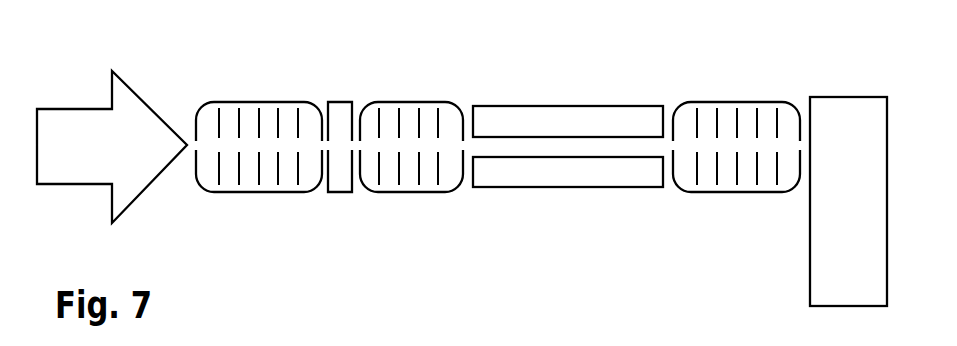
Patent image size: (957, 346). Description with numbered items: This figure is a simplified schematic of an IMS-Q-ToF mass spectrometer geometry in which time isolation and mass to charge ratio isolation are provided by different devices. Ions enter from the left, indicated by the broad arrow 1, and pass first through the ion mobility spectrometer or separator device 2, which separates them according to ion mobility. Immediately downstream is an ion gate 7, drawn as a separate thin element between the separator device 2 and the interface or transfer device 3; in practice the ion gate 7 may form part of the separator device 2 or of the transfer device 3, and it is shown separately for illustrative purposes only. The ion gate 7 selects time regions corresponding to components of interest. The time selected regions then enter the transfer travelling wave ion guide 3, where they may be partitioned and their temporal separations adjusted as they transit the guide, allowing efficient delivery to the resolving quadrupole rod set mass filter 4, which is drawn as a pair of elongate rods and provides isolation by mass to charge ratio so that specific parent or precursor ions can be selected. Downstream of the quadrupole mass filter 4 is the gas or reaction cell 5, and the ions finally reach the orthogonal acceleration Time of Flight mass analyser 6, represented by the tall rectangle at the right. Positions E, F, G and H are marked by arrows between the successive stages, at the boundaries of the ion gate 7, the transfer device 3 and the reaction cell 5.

The incident light beam 1 is at (127, 177).
The ion mobility separator 2 is at (290, 172).
The transfer device 3 is at (428, 123).
The quadrupole rod set mass filter 4 is at (612, 175).
The gas or reaction cell 5 is at (728, 120).
The orthogonal acceleration Time of Flight mass analyser 6 is at (850, 123).
The ion gate 7 is at (342, 122).
The position E is at (329, 217).
The position F is at (378, 215).
The position G is at (467, 222).
The position H is at (676, 215).